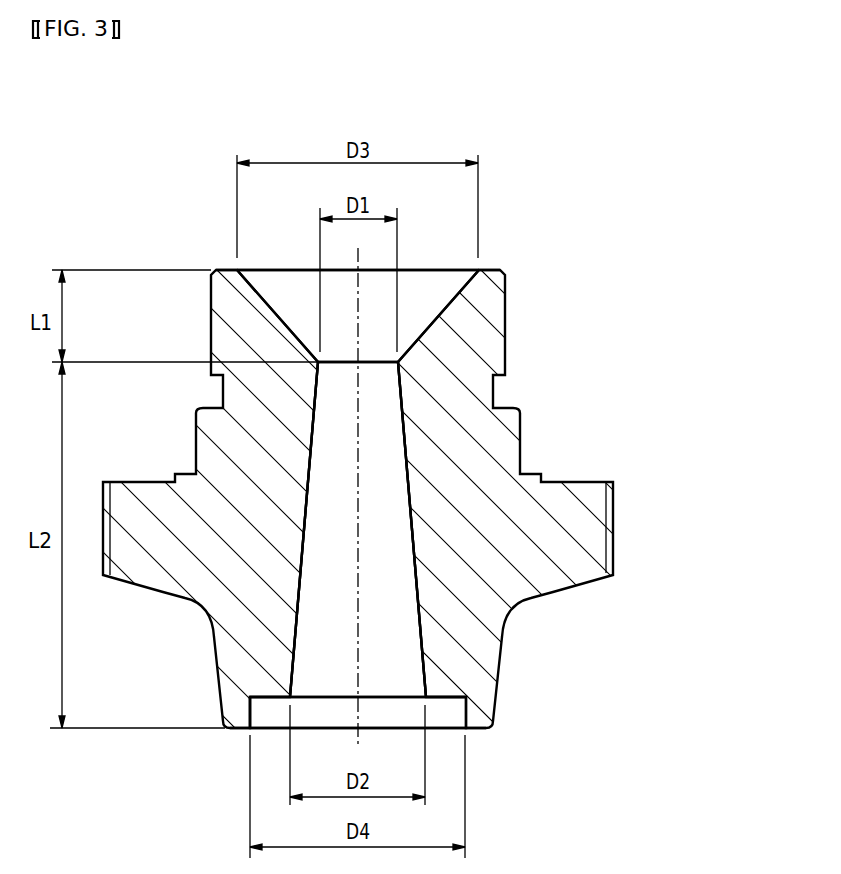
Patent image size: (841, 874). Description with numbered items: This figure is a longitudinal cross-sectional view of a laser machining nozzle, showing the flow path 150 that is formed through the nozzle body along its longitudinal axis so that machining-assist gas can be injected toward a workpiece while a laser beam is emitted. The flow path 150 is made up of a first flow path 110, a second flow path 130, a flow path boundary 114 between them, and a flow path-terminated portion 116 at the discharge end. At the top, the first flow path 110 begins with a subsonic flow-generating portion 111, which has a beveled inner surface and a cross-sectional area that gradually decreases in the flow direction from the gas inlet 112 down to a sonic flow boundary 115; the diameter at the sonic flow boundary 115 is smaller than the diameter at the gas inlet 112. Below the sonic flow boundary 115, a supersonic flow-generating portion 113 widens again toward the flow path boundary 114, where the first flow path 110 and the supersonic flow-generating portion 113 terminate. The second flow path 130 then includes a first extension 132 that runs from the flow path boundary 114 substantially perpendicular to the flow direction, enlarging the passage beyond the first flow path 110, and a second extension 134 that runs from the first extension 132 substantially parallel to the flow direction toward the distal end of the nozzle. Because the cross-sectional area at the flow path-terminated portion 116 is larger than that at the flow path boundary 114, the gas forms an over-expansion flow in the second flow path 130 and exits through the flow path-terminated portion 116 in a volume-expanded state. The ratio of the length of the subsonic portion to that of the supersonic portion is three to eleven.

The first flow path 110 is at (613, 243).
The subsonic flow-generating portion 111 is at (428, 293).
The gas inlet 112 is at (443, 270).
The supersonic flow-generating portion 113 is at (386, 448).
The flow path boundary 114 is at (390, 697).
The sonic flow boundary 115 is at (377, 361).
The flow path-terminated portion 116 is at (440, 733).
The second flow path 130 is at (451, 705).
The first extension 132 is at (270, 697).
The second extension 134 is at (250, 712).
The flow path 150 is at (420, 531).